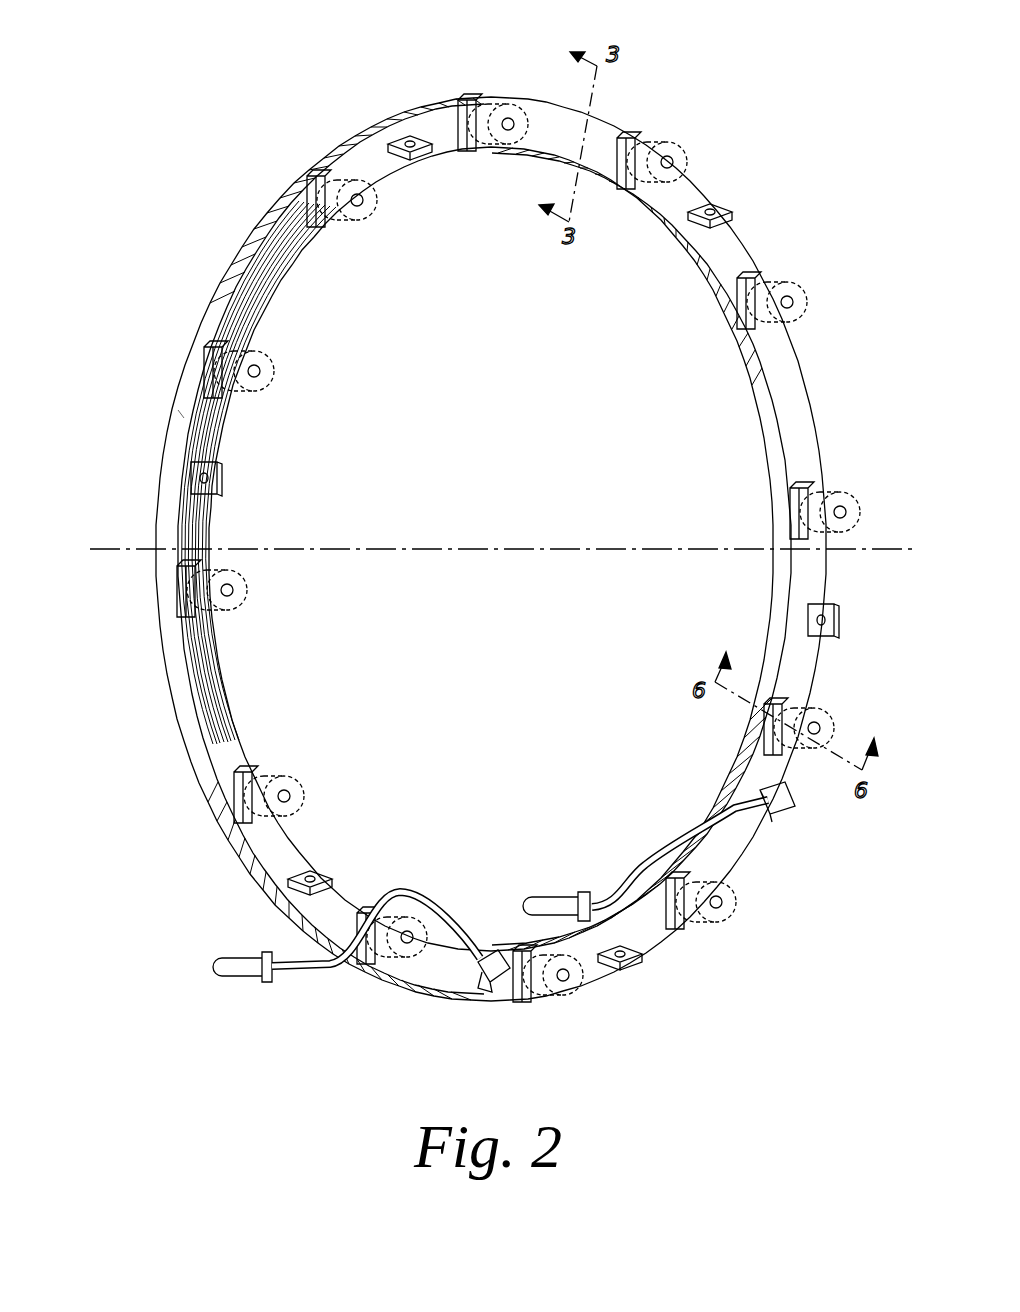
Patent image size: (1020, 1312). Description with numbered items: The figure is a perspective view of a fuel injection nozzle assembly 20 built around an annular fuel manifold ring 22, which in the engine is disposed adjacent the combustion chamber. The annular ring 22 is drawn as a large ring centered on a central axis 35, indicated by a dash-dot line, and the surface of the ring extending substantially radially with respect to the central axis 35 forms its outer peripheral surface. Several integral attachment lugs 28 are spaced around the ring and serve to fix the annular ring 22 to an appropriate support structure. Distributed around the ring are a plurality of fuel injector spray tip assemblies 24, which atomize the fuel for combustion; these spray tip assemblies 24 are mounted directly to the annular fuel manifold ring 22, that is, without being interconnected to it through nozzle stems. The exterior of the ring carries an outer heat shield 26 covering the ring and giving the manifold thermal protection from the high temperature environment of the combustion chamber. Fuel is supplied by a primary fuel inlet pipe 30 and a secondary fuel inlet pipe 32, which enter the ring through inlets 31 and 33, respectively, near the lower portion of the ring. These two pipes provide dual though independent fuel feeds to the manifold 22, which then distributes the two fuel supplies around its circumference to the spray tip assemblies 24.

The fuel injection nozzle assembly 20 is at (800, 222).
The annular fuel manifold ring 22 is at (777, 388).
The fuel injector spray tip assemblies 24 is at (506, 112).
The outer heat shield 26 is at (183, 411).
The integral attachment lugs 28 is at (400, 145).
The primary fuel inlet pipe 30 is at (318, 962).
The inlet 31 is at (500, 988).
The secondary fuel inlet pipe 32 is at (683, 848).
The inlet 33 is at (787, 812).
The central axis 35 is at (563, 552).